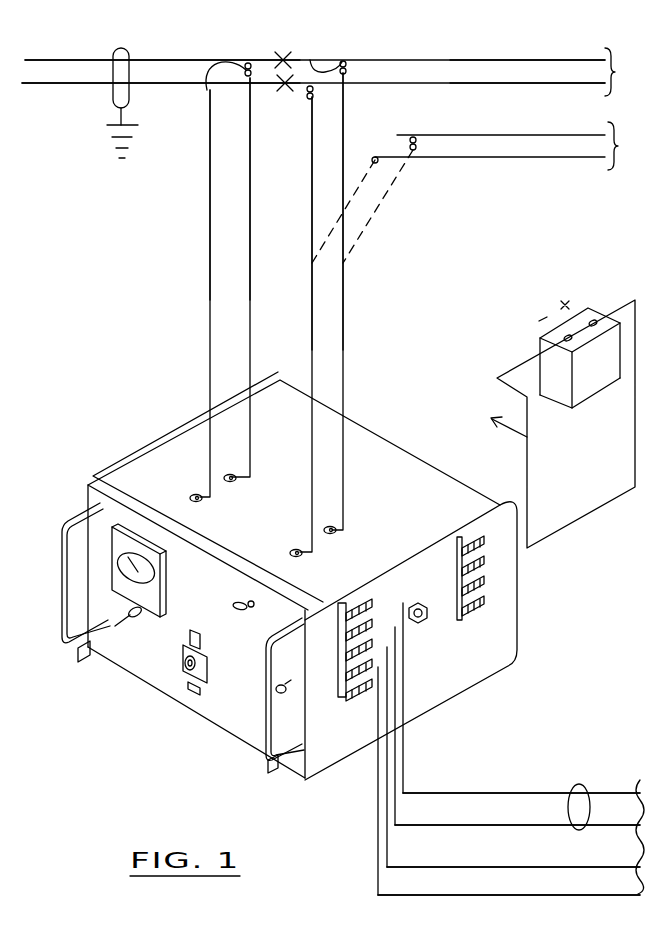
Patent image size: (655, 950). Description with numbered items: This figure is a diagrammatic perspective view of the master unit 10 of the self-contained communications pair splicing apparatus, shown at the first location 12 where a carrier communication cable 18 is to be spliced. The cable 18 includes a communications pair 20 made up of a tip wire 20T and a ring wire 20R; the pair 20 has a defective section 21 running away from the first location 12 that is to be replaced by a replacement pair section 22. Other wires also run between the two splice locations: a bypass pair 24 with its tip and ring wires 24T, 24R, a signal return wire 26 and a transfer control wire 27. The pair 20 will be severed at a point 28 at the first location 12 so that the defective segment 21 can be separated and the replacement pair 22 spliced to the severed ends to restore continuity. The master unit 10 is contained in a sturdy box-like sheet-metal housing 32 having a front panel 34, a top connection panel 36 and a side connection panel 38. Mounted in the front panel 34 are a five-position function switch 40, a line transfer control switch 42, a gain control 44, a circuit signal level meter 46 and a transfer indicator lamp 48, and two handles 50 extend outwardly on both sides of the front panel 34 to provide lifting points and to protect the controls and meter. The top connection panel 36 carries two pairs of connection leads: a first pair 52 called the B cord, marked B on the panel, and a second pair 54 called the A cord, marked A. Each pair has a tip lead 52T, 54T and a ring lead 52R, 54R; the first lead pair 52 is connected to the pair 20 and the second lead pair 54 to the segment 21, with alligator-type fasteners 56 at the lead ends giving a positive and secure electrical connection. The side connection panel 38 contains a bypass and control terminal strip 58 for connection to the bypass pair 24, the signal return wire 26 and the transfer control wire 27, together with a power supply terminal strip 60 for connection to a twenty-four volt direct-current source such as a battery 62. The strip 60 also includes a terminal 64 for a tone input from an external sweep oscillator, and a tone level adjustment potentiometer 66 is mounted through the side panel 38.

The master unit 10 is at (437, 455).
The first location 12 is at (590, 249).
The carrier communication cable 18 is at (116, 44).
The communications pair 20 is at (163, 83).
The ring wire 20R is at (92, 60).
The tip wire 20T is at (93, 83).
The section 21 is at (503, 84).
The replacement pair section 22 is at (495, 136).
The bypass pair 24 is at (578, 785).
The ring conductor of cable 24R is at (498, 792).
The tip conductor of cable 24T is at (498, 824).
The signal return wire 26 is at (480, 861).
The transfer control wire 27 is at (480, 896).
The point 28 is at (272, 80).
The housing 32 is at (168, 440).
The front panel 34 is at (248, 717).
The top connection panel 36 is at (414, 515).
The side connection panel 38 is at (457, 691).
The function switch 40 is at (178, 680).
The line transfer control switch 42 is at (250, 600).
The gain control 44 is at (130, 622).
The circuit signal level meter 46 is at (140, 530).
The transfer indicator lamp 48 is at (284, 684).
The handles 50 is at (68, 510).
The first pair of connection leads 52 is at (185, 322).
The tip lead 52T is at (208, 270).
The ring lead 52R is at (251, 292).
The second pair of connection leads 54 is at (356, 360).
The tip lead 54T is at (312, 332).
The ring lead 54R is at (378, 323).
The alligator-type fasteners 56 is at (245, 85).
The bypass and control terminal strip 58 is at (336, 686).
The power supply terminal strip 60 is at (460, 546).
The battery 62 is at (554, 395).
The terminal 64 is at (484, 588).
The tone level adjustment potentiometer 66 is at (420, 602).
The A cord A is at (313, 547).
The B cord B is at (198, 481).